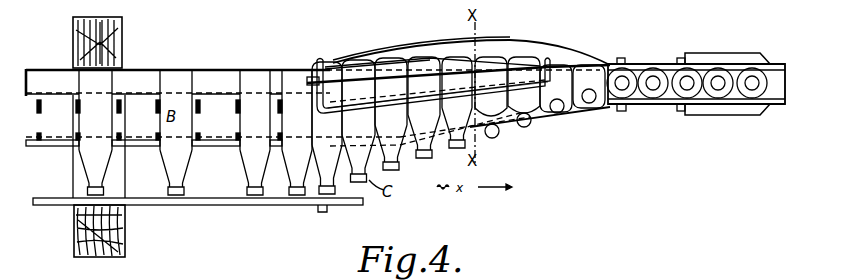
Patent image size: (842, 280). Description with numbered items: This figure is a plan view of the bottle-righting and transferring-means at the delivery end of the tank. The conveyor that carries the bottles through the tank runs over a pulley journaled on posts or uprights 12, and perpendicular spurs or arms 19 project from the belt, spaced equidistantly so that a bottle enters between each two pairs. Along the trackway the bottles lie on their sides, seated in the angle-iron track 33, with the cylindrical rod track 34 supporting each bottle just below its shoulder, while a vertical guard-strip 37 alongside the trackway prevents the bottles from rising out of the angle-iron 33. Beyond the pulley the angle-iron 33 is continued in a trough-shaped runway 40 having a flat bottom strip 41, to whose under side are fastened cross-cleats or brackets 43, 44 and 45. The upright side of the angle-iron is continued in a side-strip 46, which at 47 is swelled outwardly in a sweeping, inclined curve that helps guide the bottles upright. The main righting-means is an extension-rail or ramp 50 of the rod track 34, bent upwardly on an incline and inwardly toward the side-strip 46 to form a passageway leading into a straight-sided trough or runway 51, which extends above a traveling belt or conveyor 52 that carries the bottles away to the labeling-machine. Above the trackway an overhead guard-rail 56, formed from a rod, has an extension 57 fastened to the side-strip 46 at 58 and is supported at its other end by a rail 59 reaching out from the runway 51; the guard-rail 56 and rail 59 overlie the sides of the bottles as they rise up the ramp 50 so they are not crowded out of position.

The posts or uprights 12 is at (123, 47).
The track or rail 33 is at (313, 82).
The track or rail 34 is at (145, 148).
The spurs or arms 19 is at (159, 137).
The guard-strip 37 is at (203, 205).
The cross-cleat or bracket 43 is at (327, 210).
The fastening point 58 is at (318, 65).
The extension 57 is at (321, 110).
The side-strip 46 is at (328, 63).
The curved and inclined portion 47 is at (417, 48).
The rail 59 is at (680, 58).
The overhead guard-rail 56 is at (458, 93).
The trough-shaped track or runway 40 is at (498, 126).
The flat bottom strip 41 is at (608, 110).
The extension-rail or ramp 50 is at (431, 156).
The trough or runway 51 is at (747, 108).
The cross-cleat or bracket 45 is at (682, 56).
The cross-cleat or bracket 44 is at (625, 111).
The traveling belt or conveyor 52 is at (780, 92).